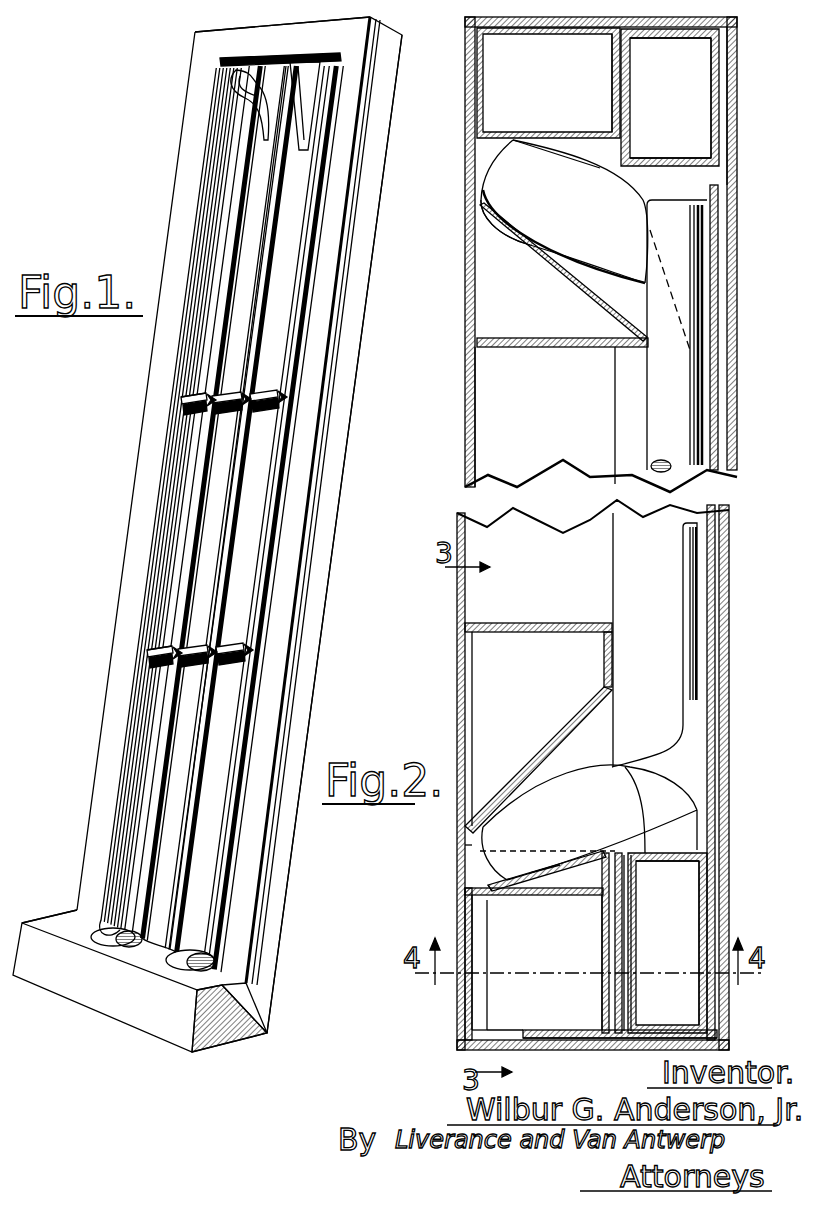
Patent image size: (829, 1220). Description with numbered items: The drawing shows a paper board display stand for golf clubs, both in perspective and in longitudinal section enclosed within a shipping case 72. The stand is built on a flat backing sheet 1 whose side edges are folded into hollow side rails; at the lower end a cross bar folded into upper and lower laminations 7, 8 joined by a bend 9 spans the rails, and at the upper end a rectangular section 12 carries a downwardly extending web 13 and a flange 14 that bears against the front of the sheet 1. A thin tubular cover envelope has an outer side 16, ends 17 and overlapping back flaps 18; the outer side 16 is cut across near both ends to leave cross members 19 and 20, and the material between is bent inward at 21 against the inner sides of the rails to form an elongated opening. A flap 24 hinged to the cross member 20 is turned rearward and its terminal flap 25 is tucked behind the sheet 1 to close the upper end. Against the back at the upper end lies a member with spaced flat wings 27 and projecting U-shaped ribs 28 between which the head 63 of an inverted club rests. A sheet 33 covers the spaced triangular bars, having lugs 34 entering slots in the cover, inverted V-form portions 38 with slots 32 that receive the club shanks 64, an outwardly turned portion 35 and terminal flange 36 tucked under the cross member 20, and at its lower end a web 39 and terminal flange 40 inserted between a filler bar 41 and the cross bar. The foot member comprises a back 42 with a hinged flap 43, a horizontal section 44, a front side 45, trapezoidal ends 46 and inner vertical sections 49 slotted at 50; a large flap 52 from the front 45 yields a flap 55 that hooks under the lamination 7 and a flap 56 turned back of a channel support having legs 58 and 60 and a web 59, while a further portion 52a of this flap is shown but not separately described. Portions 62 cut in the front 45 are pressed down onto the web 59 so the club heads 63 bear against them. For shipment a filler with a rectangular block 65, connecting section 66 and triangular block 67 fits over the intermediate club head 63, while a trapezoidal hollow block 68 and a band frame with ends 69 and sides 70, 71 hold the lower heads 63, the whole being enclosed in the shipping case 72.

In FIG. 2, the flat sheet 1 is at (727, 195).
In FIG. 2, the upper lamination 7 is at (632, 990).
In FIG. 2, the lower lamination 8 is at (633, 1002).
In FIG. 2, the bend 9 is at (620, 848).
In FIG. 2, the rectangular section 12 is at (628, 92).
In FIG. 2, the web 13 is at (654, 158).
In FIG. 2, the flange 14 is at (707, 67).
In FIG. 1, the outer side 16 is at (319, 333).
In FIG. 1, the ends 17 is at (357, 277).
In FIG. 2, the back flaps 18 is at (722, 665).
In FIG. 2, the cross member 19 is at (603, 968).
In FIG. 1, the cross member 20 is at (243, 38).
In FIG. 2, the cross member 20 is at (615, 58).
In FIG. 1, the bent material 21 is at (213, 228).
In FIG. 2, the flap 24 is at (692, 36).
In FIG. 2, the terminal flap 25 is at (727, 65).
In FIG. 2, the flat wings 27 is at (723, 236).
In FIG. 1, the U-shaped ribs 28 is at (305, 68).
In FIG. 2, the U-shaped ribs 28 is at (660, 165).
In FIG. 1, the slots 32 is at (185, 415).
In FIG. 1, the sheet 33 is at (293, 168).
In FIG. 2, the sheet 33 is at (715, 185).
In FIG. 1, the projecting lugs 34 is at (240, 135).
In FIG. 1, the outwardly turned portion 35 is at (337, 66).
In FIG. 2, the outwardly turned portion 35 is at (648, 168).
In FIG. 2, the terminal flange 36 is at (616, 103).
In FIG. 1, the inverted V-form portions 38 is at (265, 390).
In FIG. 2, the web 39 is at (672, 848).
In FIG. 2, the terminal flange 40 is at (643, 935).
In FIG. 2, the filler bar member 41 is at (710, 895).
In FIG. 2, the back section 42 is at (522, 1052).
In FIG. 2, the flap 43 is at (720, 1003).
In FIG. 1, the horizontal section 44 is at (143, 1005).
In FIG. 2, the horizontal section 44 is at (478, 943).
In FIG. 1, the front side 45 is at (65, 935).
In FIG. 2, the front side 45 is at (465, 853).
In FIG. 1, the ends 46 is at (232, 1045).
In FIG. 2, the vertical sections 49 is at (478, 908).
In FIG. 2, the slots 50 is at (547, 871).
In FIG. 2, the flap 52 is at (540, 1050).
In FIG. 2, the plate portion 52a is at (603, 895).
In FIG. 2, the flap 55 is at (640, 905).
In FIG. 2, the flap 56 is at (645, 1050).
In FIG. 2, the leg 58 is at (605, 933).
In FIG. 2, the web 59 is at (503, 893).
In FIG. 2, the second leg 60 is at (478, 992).
In FIG. 2, the portions 62 is at (540, 875).
In FIG. 1, the club heads 63 is at (265, 65).
In FIG. 2, the club heads 63 is at (548, 225).
In FIG. 1, the shanks 64 is at (310, 265).
In FIG. 2, the shanks 64 is at (683, 545).
In FIG. 2, the block 65 is at (490, 137).
In FIG. 2, the integral section 66 is at (523, 142).
In FIG. 2, the triangular block 67 is at (530, 338).
In FIG. 2, the hollow block 68 is at (603, 658).
In FIG. 2, the ends 69 is at (605, 732).
In FIG. 2, the side 70 is at (465, 1050).
In FIG. 2, the side 71 is at (535, 622).
In FIG. 2, the shipping case 72 is at (462, 442).